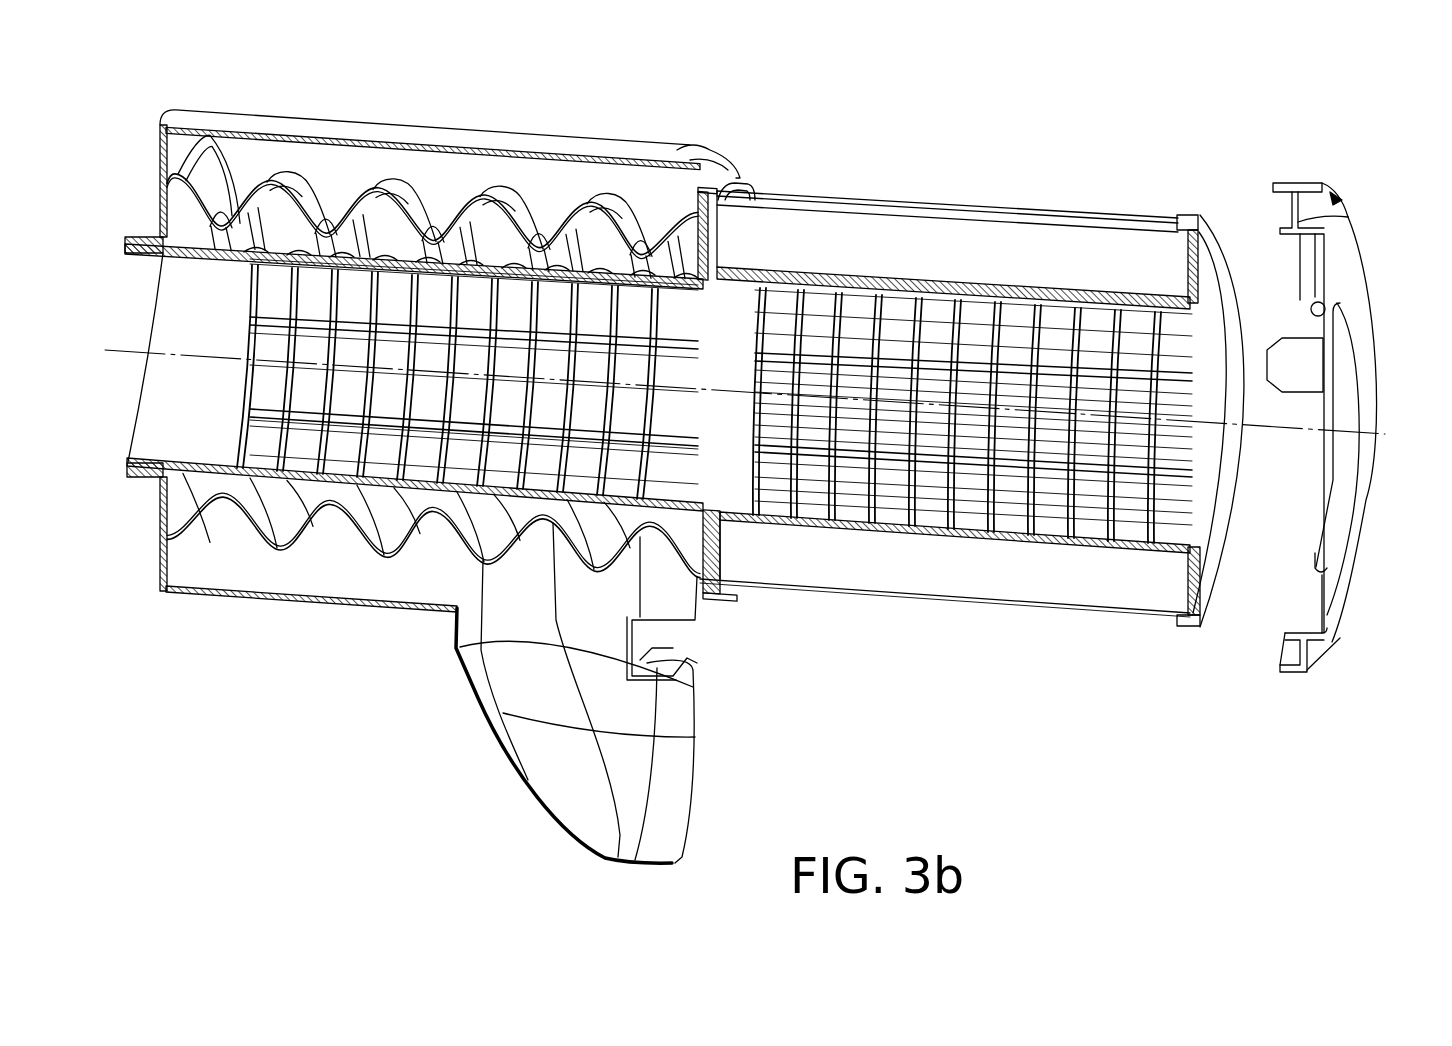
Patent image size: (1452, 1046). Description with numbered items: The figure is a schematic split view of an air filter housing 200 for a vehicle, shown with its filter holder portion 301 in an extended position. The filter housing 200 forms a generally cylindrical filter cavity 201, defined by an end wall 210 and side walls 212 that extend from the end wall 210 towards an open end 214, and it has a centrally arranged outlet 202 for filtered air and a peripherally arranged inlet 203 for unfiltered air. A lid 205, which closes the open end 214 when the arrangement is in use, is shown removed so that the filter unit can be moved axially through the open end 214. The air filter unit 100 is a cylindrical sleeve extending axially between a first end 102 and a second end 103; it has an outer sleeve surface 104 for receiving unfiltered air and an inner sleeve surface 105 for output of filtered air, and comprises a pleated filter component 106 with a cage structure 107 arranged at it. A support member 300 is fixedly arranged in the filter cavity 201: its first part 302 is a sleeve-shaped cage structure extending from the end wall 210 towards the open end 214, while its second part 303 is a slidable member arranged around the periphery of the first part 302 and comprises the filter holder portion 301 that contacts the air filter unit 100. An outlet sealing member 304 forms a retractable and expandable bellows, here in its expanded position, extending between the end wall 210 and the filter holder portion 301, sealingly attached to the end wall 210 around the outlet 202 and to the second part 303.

The air filter unit 100 is at (1005, 186).
The first end 102 is at (1213, 553).
The second end 103 is at (685, 560).
The outer sleeve surface 104 is at (1060, 607).
The inner sleeve surface 105 is at (914, 545).
The pleated filter component 106 is at (997, 570).
The cage structure 107 is at (828, 535).
The air filter housing 200 is at (490, 112).
The filter cavity 201 is at (553, 183).
The outlet 202 is at (148, 322).
The inlet 203 is at (487, 698).
The lid 205 is at (1340, 268).
The end wall 210 is at (188, 150).
The side walls 212 is at (336, 158).
The open end 214 is at (667, 178).
The support member 300 is at (243, 543).
The filter holder portion 301 is at (722, 240).
The first part 302 is at (282, 386).
The second part 303 is at (752, 188).
The outlet sealing member 304 is at (293, 170).